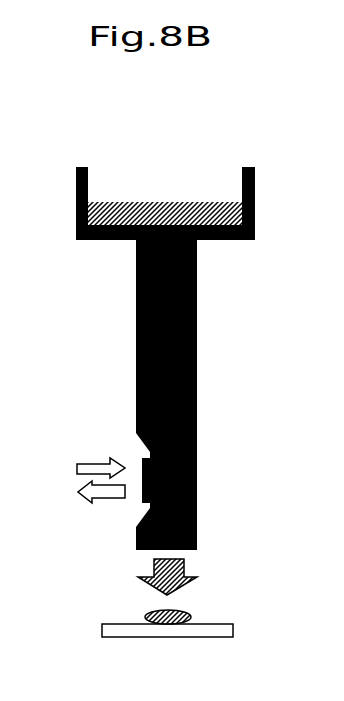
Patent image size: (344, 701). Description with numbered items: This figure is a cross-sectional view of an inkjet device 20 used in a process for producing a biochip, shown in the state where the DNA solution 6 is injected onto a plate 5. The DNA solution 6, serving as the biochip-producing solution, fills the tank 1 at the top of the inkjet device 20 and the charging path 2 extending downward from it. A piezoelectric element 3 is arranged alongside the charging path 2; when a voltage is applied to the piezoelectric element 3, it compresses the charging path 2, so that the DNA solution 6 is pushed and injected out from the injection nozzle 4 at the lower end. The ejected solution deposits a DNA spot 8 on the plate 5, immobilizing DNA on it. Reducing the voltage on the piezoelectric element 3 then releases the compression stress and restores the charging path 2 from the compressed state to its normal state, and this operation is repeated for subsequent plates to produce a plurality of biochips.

The tank 1 is at (77, 167).
The charging path 2 is at (137, 407).
The piezoelectric element 3 is at (142, 503).
The injection nozzle 4 is at (184, 553).
The plate 5 is at (237, 627).
The DNA solution 6 is at (186, 204).
The DNA spot 8 is at (143, 617).
The inkjet device 20 is at (82, 344).